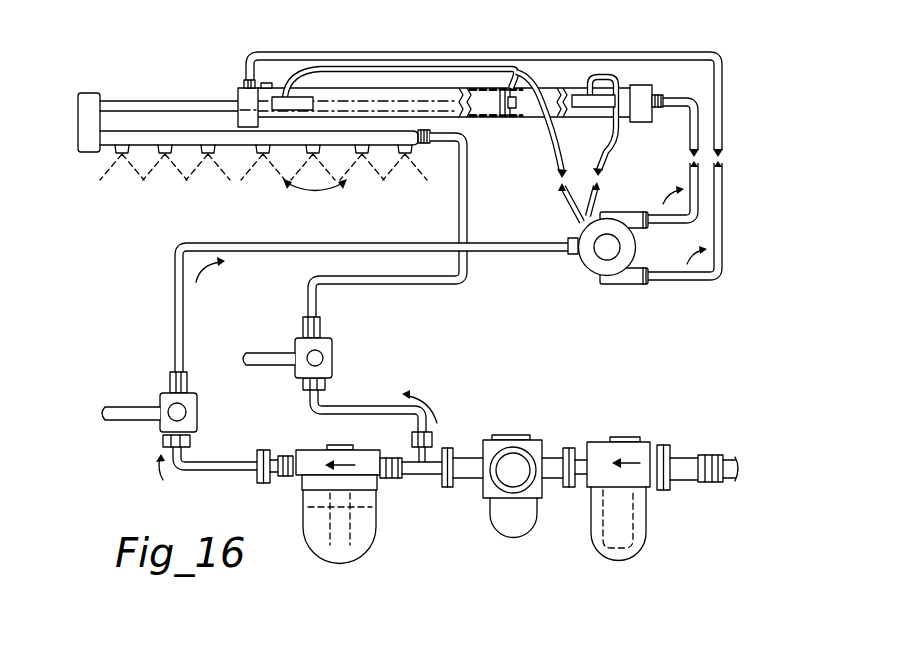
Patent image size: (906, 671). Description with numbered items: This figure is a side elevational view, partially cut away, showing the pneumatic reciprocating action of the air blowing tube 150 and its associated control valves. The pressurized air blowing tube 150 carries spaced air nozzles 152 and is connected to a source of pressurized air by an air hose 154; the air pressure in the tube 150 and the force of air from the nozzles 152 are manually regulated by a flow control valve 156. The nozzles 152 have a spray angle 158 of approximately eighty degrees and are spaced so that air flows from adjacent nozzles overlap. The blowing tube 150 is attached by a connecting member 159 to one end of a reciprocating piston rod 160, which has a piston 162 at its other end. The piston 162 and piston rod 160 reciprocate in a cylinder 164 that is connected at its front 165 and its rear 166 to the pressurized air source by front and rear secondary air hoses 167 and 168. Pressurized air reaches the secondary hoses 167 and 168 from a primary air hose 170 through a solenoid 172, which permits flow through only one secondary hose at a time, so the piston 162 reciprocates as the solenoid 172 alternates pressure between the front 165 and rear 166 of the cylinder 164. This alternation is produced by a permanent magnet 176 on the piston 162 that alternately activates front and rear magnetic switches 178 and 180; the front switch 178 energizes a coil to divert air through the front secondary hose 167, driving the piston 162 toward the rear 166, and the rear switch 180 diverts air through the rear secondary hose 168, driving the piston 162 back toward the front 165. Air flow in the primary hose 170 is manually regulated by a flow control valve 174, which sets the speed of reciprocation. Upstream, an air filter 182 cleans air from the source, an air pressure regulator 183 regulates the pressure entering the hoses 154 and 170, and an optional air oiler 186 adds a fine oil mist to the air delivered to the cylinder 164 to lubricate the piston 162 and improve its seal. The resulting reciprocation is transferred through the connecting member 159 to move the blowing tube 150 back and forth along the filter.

The pressurized air blowing tube 150 is at (178, 146).
The air nozzles 152 is at (117, 152).
The air hose 154 is at (399, 285).
The flow control valve 156 is at (337, 357).
The spray angle 158 is at (287, 190).
The connecting member 159 is at (88, 137).
The reciprocating piston rod 160 is at (120, 103).
The piston 162 is at (521, 120).
The cylinder 164 is at (250, 62).
The front of the cylinder 165 is at (239, 93).
The rear of the cylinder 166 is at (640, 92).
The front secondary air hose 167 is at (268, 93).
The rear secondary air hose 168 is at (690, 135).
The primary air hose 170 is at (515, 255).
The solenoid 172 is at (596, 262).
The flow control valve 174 is at (167, 394).
The permanent magnet 176 is at (508, 88).
The front magnetic switch 178 is at (284, 97).
The rear magnetic switch 180 is at (584, 97).
The air filter 182 is at (600, 453).
The air pressure regulator 183 is at (513, 438).
The air oiler 186 is at (372, 536).